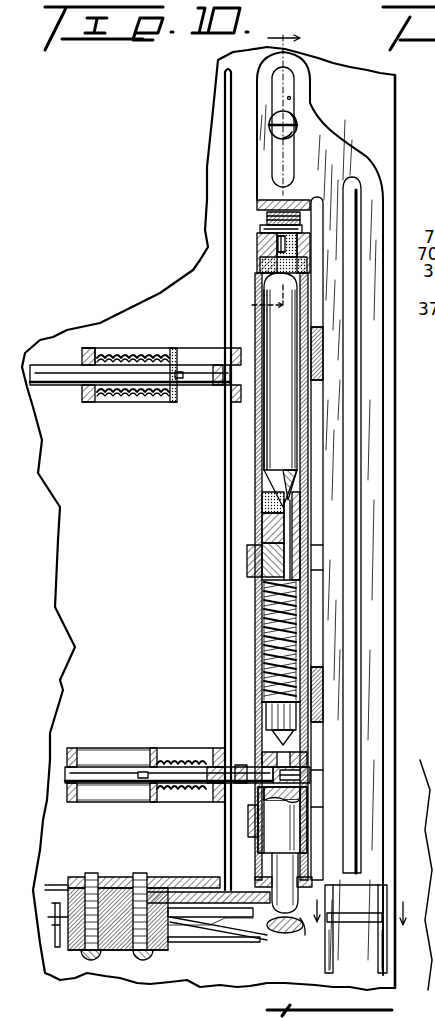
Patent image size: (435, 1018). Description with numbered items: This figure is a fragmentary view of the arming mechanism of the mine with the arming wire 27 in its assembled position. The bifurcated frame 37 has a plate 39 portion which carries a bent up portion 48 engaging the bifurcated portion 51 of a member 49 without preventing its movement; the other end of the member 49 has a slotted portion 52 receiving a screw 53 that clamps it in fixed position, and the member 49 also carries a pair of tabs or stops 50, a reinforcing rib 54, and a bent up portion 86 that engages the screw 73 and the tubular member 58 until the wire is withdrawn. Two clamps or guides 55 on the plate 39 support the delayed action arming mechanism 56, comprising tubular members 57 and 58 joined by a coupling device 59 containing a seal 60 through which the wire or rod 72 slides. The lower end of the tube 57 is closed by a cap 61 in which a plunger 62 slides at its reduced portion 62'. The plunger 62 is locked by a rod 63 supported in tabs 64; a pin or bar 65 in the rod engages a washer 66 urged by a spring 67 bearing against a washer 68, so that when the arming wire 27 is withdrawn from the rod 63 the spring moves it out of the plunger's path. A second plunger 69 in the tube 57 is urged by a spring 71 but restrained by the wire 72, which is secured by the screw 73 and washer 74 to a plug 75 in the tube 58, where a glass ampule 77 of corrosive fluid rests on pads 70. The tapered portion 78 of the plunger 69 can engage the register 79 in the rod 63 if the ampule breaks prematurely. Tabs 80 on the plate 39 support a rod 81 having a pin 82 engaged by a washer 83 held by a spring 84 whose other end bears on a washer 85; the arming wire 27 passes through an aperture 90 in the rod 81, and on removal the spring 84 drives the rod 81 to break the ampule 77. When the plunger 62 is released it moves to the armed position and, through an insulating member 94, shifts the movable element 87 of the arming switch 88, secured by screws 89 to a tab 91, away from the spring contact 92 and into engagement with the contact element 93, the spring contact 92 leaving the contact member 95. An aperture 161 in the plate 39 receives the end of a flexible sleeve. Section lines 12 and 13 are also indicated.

The section line 12- 12 is at (266, 171).
The section line 13- 13 is at (360, 904).
The arming wire 27 is at (226, 577).
The bifurcated frame 37 is at (404, 607).
The plate 39 is at (208, 518).
The bent up portion 48 is at (388, 924).
The member 49 is at (373, 490).
The tabs or stops 50 is at (317, 355).
The bifurcated portion 51 is at (345, 955).
The slotted portion 52 is at (290, 98).
The screw 53 is at (296, 122).
The reinforcing rib 54 is at (360, 190).
The clamps or guides 55 is at (247, 553).
The delayed action arming mechanism 56 is at (250, 646).
The tubular member 57 is at (257, 607).
The tubular member 58 is at (257, 455).
The coupling device 59 is at (262, 522).
The seal 60 is at (262, 540).
The cap 61 is at (257, 883).
The plunger 62 is at (282, 820).
The reduced portion 62' is at (249, 877).
The rod 63 is at (113, 765).
The tabs 64 is at (77, 800).
The pin or bar 65 is at (143, 772).
The washer 66 is at (154, 748).
The spring 67 is at (180, 757).
The washer 68 is at (215, 767).
The plunger 69 is at (280, 717).
The pads 70 is at (257, 263).
The spring 71 is at (267, 580).
The wire or rod 72 is at (297, 487).
The screw 73 is at (267, 218).
The washer 74 is at (262, 229).
The plug 75 is at (262, 247).
The glass ampule 77 is at (280, 371).
The tapered portion 78 is at (307, 752).
The reduced cylindrical portion or register 79 is at (290, 776).
The tabs 80 is at (87, 345).
The rod 81 is at (50, 387).
The pin 82 is at (178, 370).
The washer 83 is at (172, 402).
The spring 84 is at (133, 355).
The washer 85 is at (93, 355).
The bent up portion 86 is at (270, 200).
The movable element 87 is at (250, 932).
The arming switch 88 is at (188, 938).
The screws 89 is at (143, 958).
The aperture 90 is at (220, 365).
The tab 91 is at (163, 877).
The spring contact 92 is at (283, 934).
The contact element 93 is at (233, 942).
The insulating member 94 is at (311, 938).
The contact member 95 is at (200, 892).
The aperture 161 is at (150, 945).